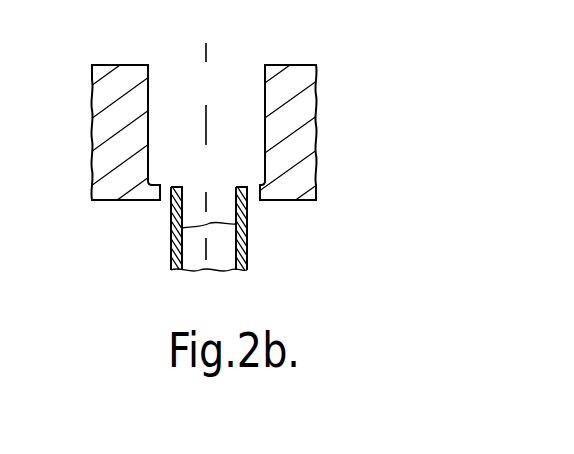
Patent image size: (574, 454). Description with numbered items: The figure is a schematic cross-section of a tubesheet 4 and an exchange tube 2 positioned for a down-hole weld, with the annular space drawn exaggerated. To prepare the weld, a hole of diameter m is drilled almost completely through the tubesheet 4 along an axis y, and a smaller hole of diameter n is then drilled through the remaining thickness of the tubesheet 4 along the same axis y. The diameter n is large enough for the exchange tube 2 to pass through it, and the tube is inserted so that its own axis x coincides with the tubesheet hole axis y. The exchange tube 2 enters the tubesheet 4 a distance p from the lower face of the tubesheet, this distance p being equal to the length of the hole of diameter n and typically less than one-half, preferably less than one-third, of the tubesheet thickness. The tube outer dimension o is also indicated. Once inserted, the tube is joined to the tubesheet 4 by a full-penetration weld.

The exchange tube 2 is at (172, 248).
The tubesheet 4 is at (318, 153).
The diameter of larger tubesheet hole m is at (265, 79).
The diameter of smaller tubesheet hole n is at (255, 172).
The tube outer diameter dimension o is at (248, 296).
The exchange tube axis x is at (247, 242).
The insertion distance p is at (264, 196).
The tubesheet hole axis y is at (208, 52).